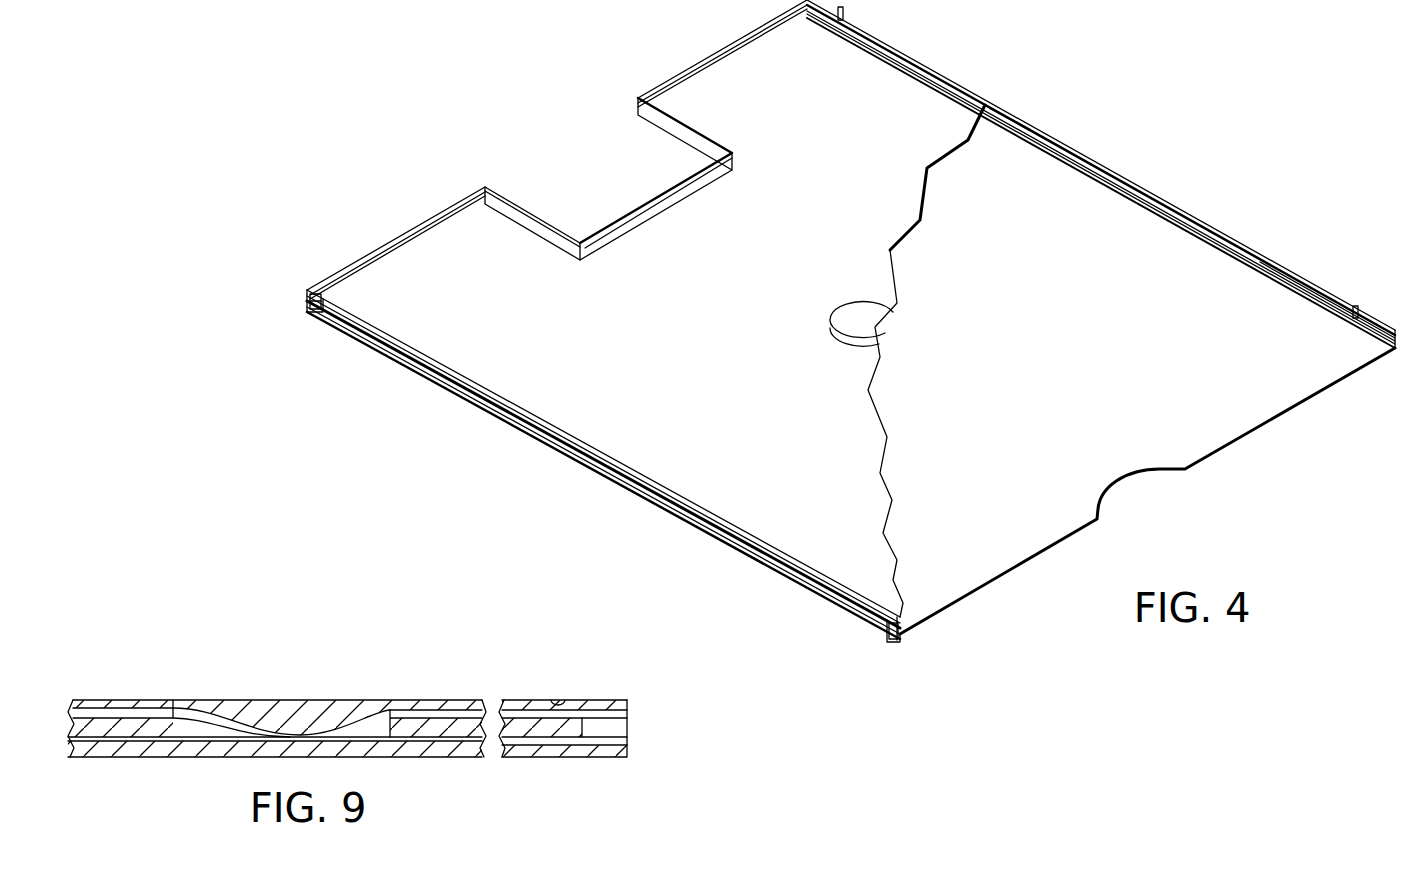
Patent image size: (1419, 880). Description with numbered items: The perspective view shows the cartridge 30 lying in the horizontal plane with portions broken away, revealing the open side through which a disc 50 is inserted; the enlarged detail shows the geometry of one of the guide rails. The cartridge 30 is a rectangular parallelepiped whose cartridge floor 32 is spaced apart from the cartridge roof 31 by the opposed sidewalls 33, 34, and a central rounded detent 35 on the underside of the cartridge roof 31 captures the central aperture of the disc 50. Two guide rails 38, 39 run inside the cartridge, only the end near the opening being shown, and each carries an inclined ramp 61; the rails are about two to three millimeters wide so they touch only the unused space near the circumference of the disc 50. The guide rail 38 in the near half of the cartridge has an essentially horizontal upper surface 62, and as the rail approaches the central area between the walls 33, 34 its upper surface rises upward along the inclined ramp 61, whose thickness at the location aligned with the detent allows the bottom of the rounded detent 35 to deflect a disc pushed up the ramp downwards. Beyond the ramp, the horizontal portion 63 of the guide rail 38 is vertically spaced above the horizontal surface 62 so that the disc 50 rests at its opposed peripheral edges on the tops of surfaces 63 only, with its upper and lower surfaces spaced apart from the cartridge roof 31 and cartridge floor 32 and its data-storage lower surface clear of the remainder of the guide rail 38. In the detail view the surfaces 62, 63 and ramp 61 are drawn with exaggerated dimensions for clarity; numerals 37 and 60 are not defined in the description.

In FIG. 4, the cartridge 30 is at (660, 336).
In FIG. 9, the cartridge roof 31 is at (140, 700).
In FIG. 9, the cartridge floor 32 is at (95, 757).
In FIG. 4, the sidewall 33 is at (596, 470).
In FIG. 4, the sidewall 34 is at (1280, 264).
In FIG. 4, the rounded detent 35 is at (848, 300).
In FIG. 9, the rounded detent 35 is at (298, 716).
In FIG. 4, the rail end cap 37 is at (312, 314).
In FIG. 4, the guide rail 38 is at (1108, 194).
In FIG. 9, the guide rail 38 is at (545, 757).
In FIG. 4, the guide rail 39 is at (905, 636).
In FIG. 9, the disc 50 is at (557, 700).
In FIG. 4, the rail lip 60 is at (1258, 272).
In FIG. 4, the inclined ramp 61 is at (1018, 116).
In FIG. 9, the inclined ramp 61 is at (418, 740).
In FIG. 9, the horizontal upper surface 62 is at (612, 738).
In FIG. 9, the horizontal portion 63 is at (176, 706).